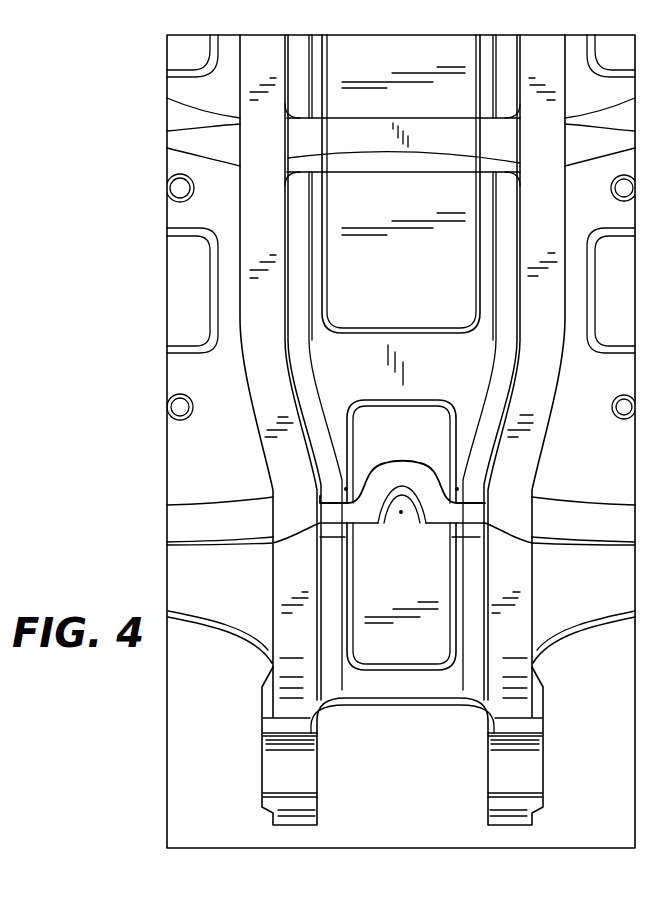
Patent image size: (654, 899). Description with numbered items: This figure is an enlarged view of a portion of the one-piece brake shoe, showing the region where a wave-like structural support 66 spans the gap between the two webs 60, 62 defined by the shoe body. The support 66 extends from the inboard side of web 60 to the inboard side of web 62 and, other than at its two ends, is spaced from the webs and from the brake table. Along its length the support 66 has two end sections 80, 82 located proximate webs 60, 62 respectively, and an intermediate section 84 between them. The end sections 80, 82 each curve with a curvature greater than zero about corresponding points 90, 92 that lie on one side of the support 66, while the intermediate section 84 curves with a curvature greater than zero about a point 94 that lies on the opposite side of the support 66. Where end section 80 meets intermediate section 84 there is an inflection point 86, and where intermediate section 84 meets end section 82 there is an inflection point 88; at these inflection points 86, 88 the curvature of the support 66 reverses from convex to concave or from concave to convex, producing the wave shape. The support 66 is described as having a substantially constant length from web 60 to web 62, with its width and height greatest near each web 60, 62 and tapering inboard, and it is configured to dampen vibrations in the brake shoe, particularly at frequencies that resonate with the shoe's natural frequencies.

The web 60 is at (262, 310).
The web 62 is at (537, 293).
The structural support 66 is at (388, 466).
The end section 80 is at (276, 543).
The end section 82 is at (473, 510).
The intermediate section 84 is at (410, 474).
The inflection point 86 is at (353, 505).
The inflection point 88 is at (442, 503).
The point 90 is at (346, 489).
The point 92 is at (457, 489).
The point 94 is at (401, 513).